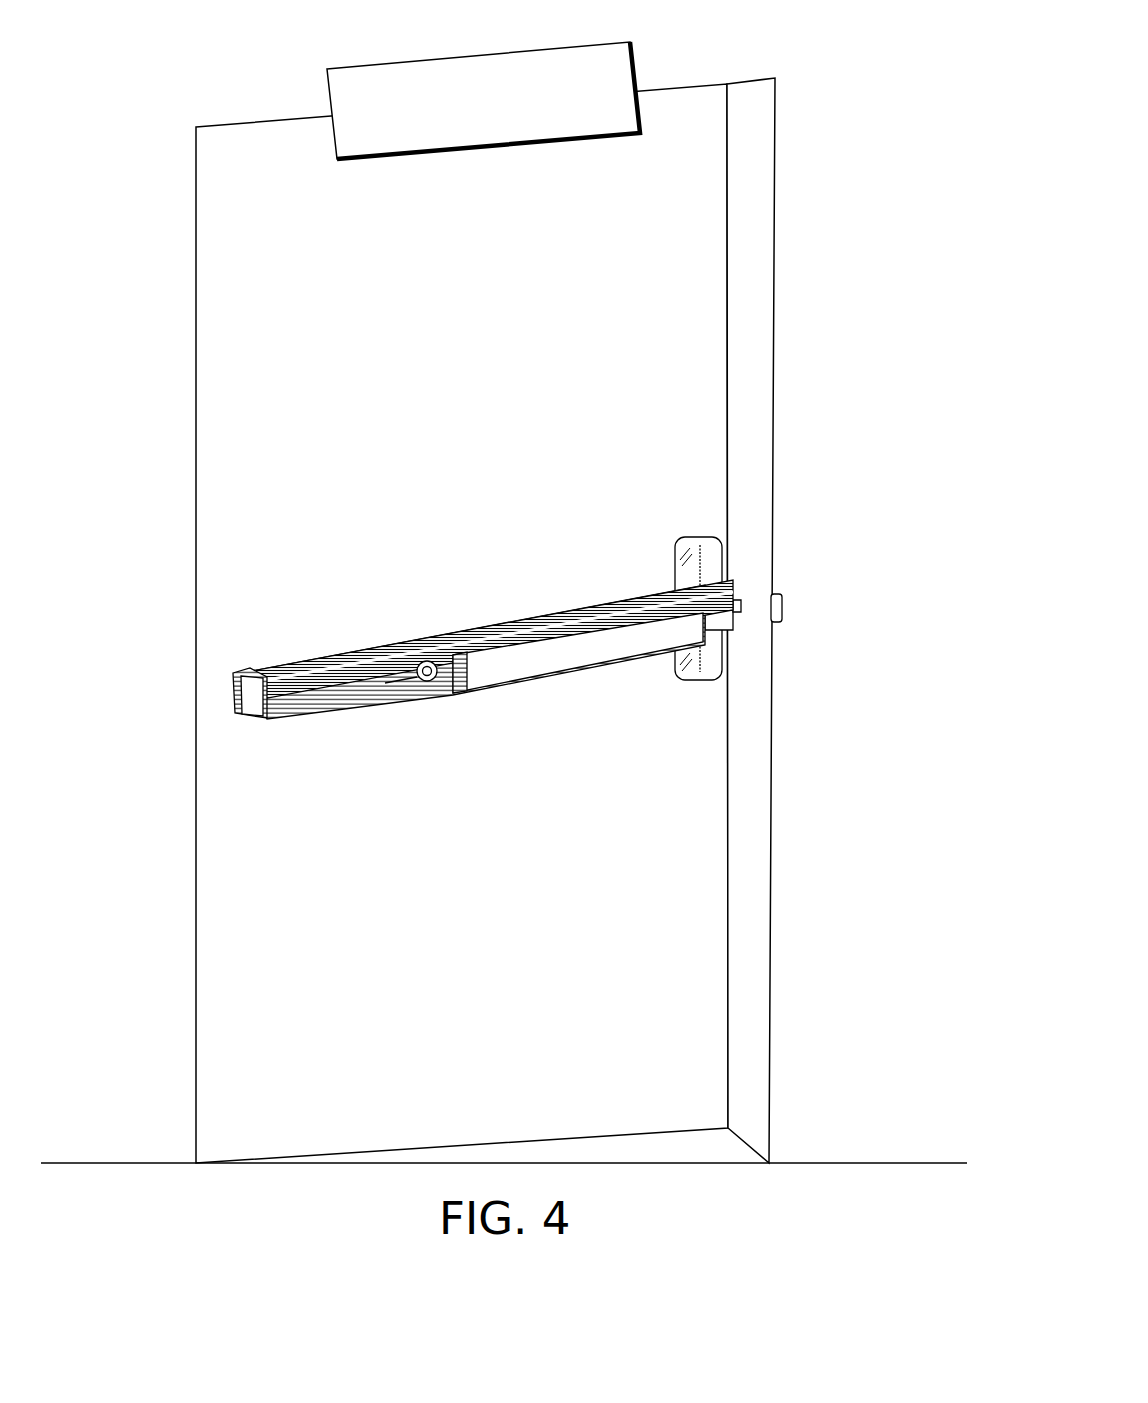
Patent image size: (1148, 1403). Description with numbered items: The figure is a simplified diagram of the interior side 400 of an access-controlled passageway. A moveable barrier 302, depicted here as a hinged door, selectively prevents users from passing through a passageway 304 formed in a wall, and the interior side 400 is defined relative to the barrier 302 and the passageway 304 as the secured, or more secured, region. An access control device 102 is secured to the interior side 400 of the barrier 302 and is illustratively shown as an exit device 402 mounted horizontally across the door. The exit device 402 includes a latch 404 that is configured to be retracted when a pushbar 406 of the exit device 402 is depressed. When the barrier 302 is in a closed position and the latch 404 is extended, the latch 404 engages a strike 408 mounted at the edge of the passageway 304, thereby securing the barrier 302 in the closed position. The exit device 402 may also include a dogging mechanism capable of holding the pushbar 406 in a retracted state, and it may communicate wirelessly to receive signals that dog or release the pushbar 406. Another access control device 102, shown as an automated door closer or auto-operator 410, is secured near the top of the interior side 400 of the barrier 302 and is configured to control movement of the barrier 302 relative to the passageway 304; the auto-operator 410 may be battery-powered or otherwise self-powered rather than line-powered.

The interior side 400 is at (146, 83).
The access control device 102 is at (478, 55).
The auto-operator 410 is at (483, 81).
The exit device 402 is at (544, 643).
The moveable barrier 302 is at (728, 259).
The passageway 304 is at (754, 456).
The latch 404 is at (739, 605).
The pushbar 406 is at (552, 665).
The strike 408 is at (782, 605).